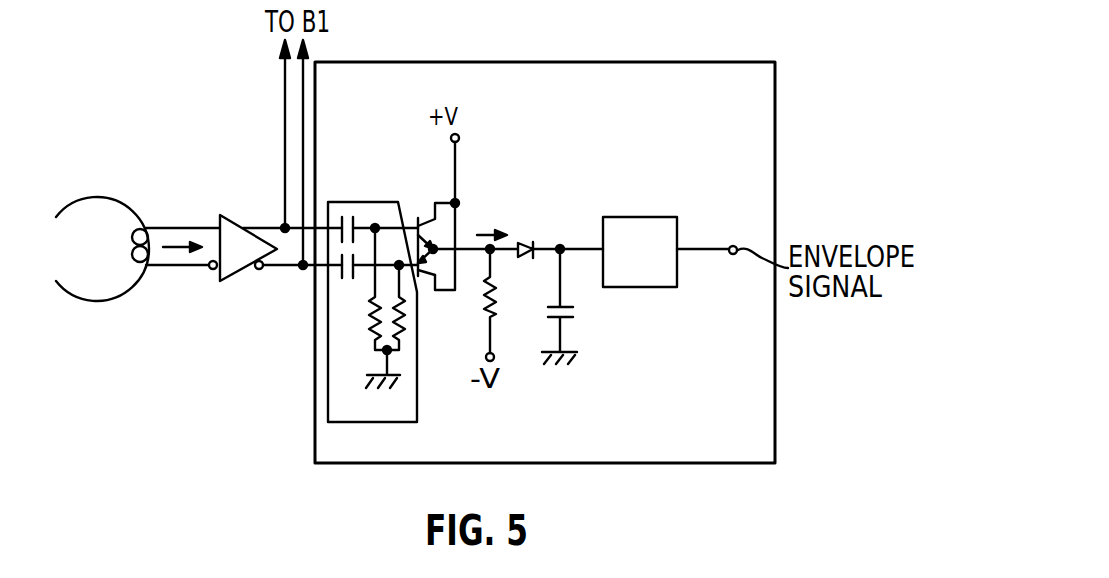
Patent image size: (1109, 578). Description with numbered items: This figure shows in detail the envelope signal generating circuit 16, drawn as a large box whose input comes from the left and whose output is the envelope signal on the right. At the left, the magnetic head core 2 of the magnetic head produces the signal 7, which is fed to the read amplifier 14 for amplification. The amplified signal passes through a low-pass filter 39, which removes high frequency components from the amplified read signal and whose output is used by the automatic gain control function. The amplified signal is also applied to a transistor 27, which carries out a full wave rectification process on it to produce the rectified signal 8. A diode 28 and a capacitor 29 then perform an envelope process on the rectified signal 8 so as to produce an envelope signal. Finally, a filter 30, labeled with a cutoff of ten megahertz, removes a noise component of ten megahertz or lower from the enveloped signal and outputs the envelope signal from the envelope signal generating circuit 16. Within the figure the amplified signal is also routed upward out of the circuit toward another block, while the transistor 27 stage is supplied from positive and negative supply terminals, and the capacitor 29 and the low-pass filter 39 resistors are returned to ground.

The magnetic head core 2 is at (97, 198).
The signal 7 is at (181, 245).
The read amplifier 14 is at (233, 273).
The envelope signal generating circuit 16 is at (775, 407).
The low-pass filter 39 is at (417, 407).
The transistor 27 is at (457, 225).
The rectified signal 8 is at (480, 235).
The diode 28 is at (526, 243).
The capacitor 29 is at (568, 321).
The filter 30 is at (647, 288).